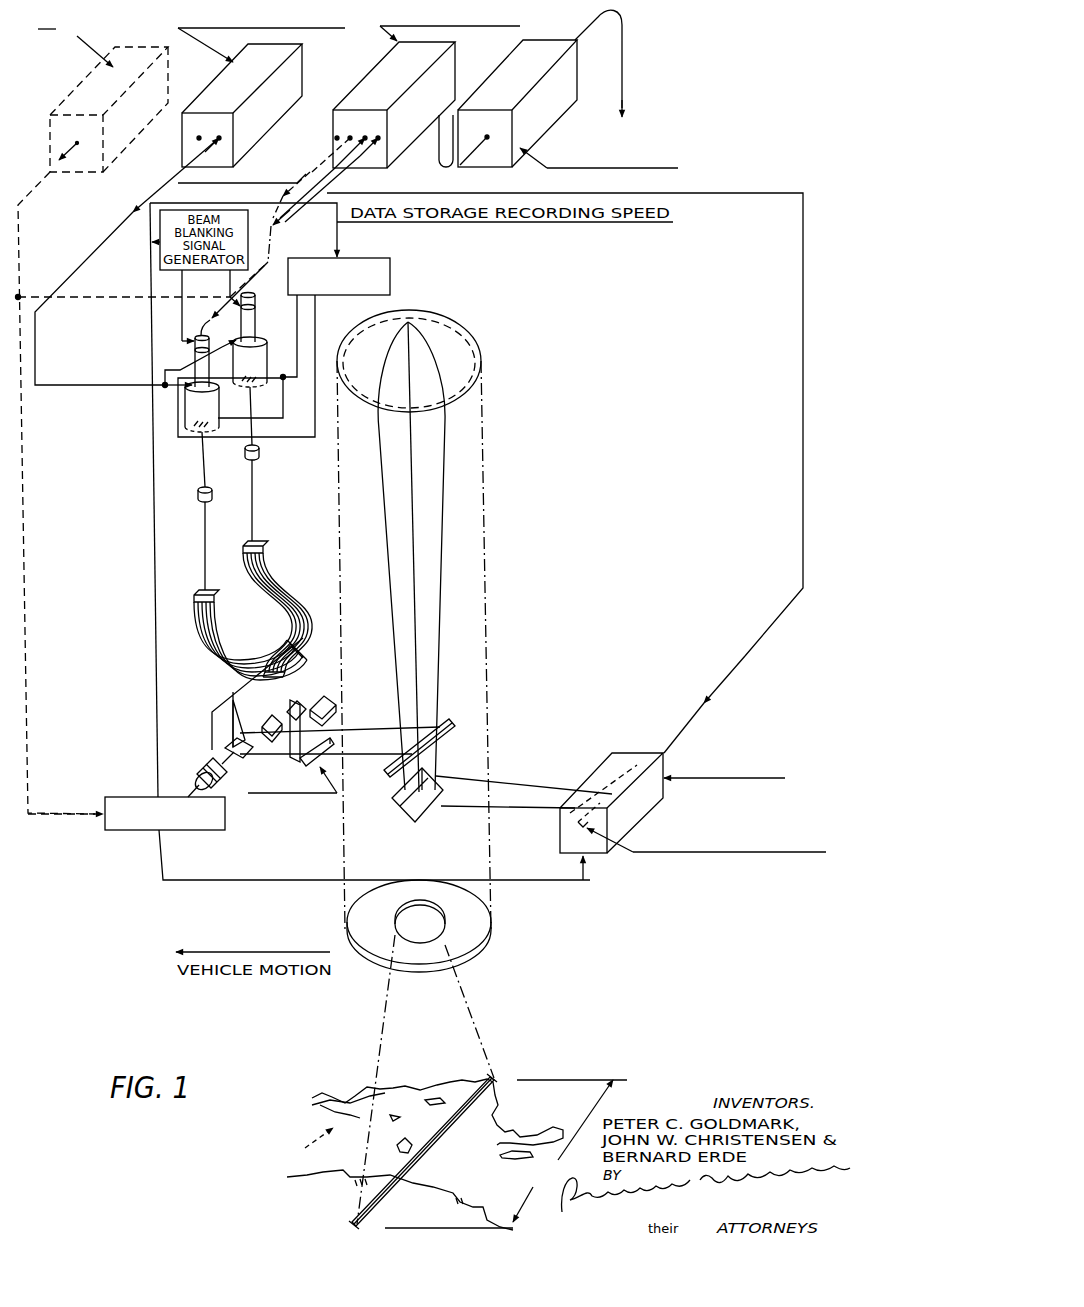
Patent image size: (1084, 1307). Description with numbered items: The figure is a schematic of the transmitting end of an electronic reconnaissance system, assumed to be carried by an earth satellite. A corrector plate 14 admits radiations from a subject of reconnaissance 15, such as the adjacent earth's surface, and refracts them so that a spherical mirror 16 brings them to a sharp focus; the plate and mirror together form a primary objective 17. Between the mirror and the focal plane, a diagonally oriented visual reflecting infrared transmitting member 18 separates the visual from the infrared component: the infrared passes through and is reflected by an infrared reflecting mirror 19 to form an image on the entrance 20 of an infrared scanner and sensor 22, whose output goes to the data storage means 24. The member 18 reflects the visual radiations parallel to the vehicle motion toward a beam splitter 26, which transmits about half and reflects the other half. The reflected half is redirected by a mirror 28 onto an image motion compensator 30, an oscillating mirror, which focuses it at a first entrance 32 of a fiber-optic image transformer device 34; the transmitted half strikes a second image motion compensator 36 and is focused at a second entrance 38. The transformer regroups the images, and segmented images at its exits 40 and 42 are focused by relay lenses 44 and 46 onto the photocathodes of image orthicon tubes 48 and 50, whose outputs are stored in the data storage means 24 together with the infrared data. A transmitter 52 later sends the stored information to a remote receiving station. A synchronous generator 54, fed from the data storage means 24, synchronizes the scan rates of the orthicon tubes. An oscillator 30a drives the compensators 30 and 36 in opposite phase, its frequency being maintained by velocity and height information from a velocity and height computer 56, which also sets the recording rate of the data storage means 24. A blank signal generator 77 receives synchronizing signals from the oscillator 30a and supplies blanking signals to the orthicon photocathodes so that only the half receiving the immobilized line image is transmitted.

The corrector plate 14 is at (432, 928).
The subject of reconnaissance 15 is at (437, 1145).
The spherical mirror 16 is at (461, 324).
The primary objective 17 is at (495, 536).
The visual reflecting infrared transmitting member 18 is at (437, 744).
The infrared reflecting mirror 19 is at (416, 822).
The entrance of infrared scanner and sensor 20 is at (578, 818).
The infrared scanner and sensor 22 is at (630, 753).
The data storage means 24 is at (447, 82).
The beam splitter 26 is at (331, 737).
The mirror 28 is at (333, 696).
The image motion compensator 30 is at (298, 693).
The oscillator 30a is at (118, 797).
The first entrance of image transformer 32 is at (310, 632).
The image transformer device 34 is at (230, 590).
The second image motion compensator 36 is at (227, 743).
The second entrance of image transformer 38 is at (217, 716).
The exit of image transformer 40 is at (254, 543).
The exit of image transformer 42 is at (199, 594).
The relay lens 44 is at (260, 455).
The relay lens 46 is at (208, 498).
The image orthicon tube 48 is at (253, 335).
The image orthicon tube 50 is at (187, 407).
The transmitter 52 is at (570, 72).
The synchronous generator 54 is at (291, 87).
The velocity and height computer 56 is at (80, 82).
The blank signal generator 77 is at (390, 268).